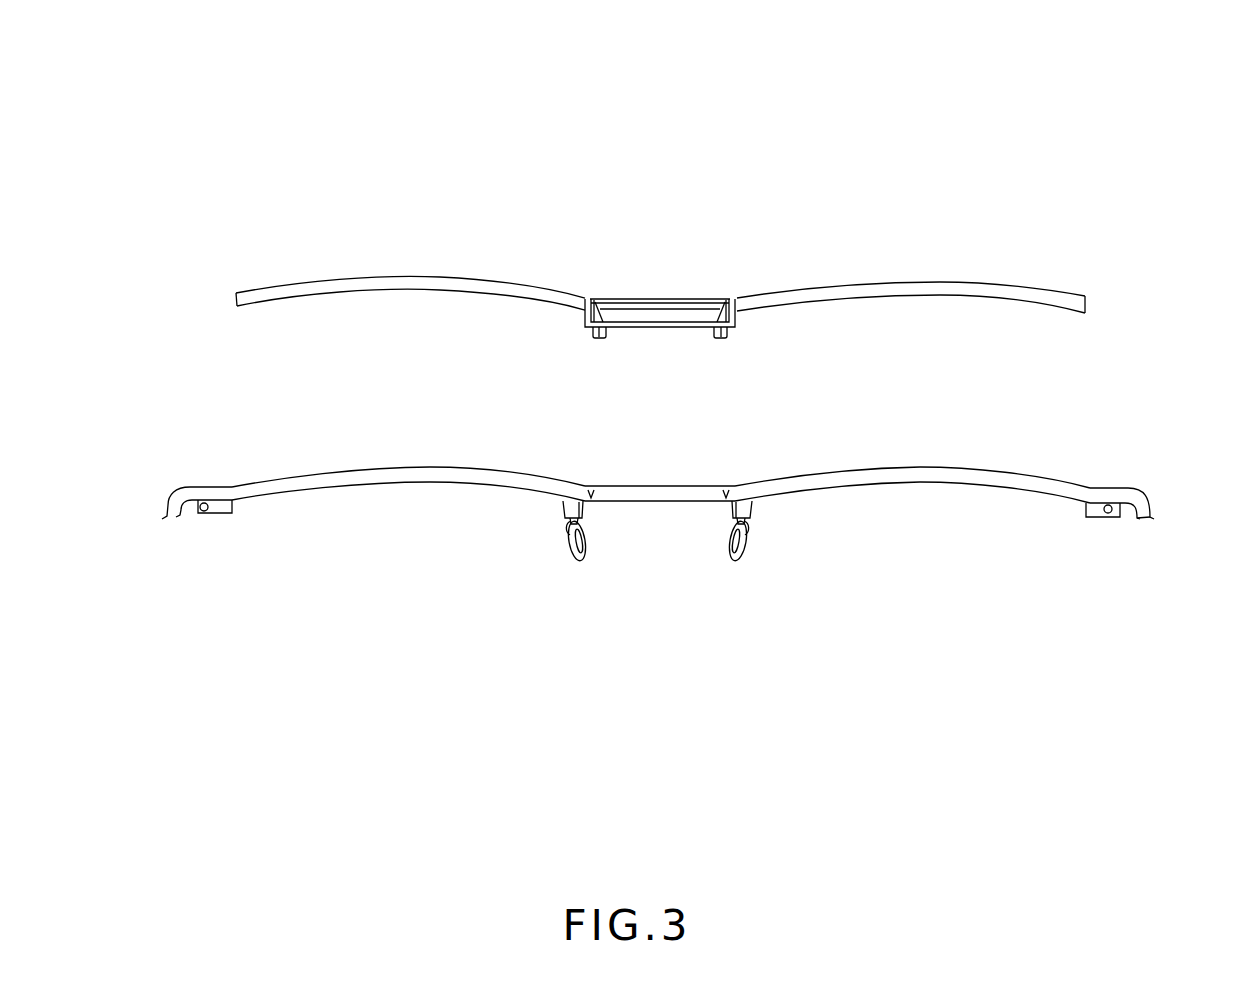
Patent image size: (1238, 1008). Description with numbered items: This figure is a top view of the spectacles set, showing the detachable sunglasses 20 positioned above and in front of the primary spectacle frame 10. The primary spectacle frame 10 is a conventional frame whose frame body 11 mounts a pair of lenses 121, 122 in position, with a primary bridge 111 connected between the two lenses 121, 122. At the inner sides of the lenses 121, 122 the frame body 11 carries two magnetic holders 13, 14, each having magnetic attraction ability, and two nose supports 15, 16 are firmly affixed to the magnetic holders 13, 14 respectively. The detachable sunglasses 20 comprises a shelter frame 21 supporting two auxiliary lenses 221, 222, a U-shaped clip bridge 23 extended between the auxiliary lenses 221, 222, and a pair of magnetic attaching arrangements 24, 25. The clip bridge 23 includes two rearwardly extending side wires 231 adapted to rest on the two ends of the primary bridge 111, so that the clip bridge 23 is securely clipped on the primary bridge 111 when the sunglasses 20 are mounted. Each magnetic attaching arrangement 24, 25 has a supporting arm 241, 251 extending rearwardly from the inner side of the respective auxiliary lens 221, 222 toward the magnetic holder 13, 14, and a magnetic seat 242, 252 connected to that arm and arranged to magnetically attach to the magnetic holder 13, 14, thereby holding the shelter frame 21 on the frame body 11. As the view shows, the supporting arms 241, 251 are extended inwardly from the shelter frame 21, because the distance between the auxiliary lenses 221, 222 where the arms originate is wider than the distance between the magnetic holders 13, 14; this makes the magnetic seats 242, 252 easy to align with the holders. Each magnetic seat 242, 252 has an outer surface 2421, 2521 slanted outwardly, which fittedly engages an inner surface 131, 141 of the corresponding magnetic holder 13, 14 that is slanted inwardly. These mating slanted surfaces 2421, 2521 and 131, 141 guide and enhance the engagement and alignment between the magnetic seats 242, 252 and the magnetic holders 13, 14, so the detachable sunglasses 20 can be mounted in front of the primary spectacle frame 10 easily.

The primary spectacle frame 10 is at (861, 735).
The frame body 11 is at (1036, 634).
The primary bridge 111 is at (656, 501).
The lens 121 is at (350, 479).
The lens 122 is at (968, 480).
The magnetic holder 13 is at (563, 505).
The inner surface 131 is at (595, 499).
The magnetic holder 14 is at (763, 504).
The inner surface 141 is at (735, 500).
The nose support 15 is at (583, 560).
The nose support 16 is at (727, 556).
The detachable sunglasses 20 is at (934, 127).
The shelter frame 21 is at (1077, 192).
The auxiliary lens 221 is at (365, 286).
The auxiliary lens 222 is at (875, 287).
The clip bridge 23 is at (626, 302).
The side wire 231 is at (678, 321).
The magnetic attaching arrangement 24 is at (430, 331).
The supporting arm 241 is at (600, 299).
The magnetic seat 242 is at (602, 336).
The outer surface 2421 is at (590, 333).
The magnetic attaching arrangement 25 is at (877, 345).
The supporting arm 251 is at (714, 311).
The magnetic seat 252 is at (718, 337).
The outer surface 2521 is at (729, 336).